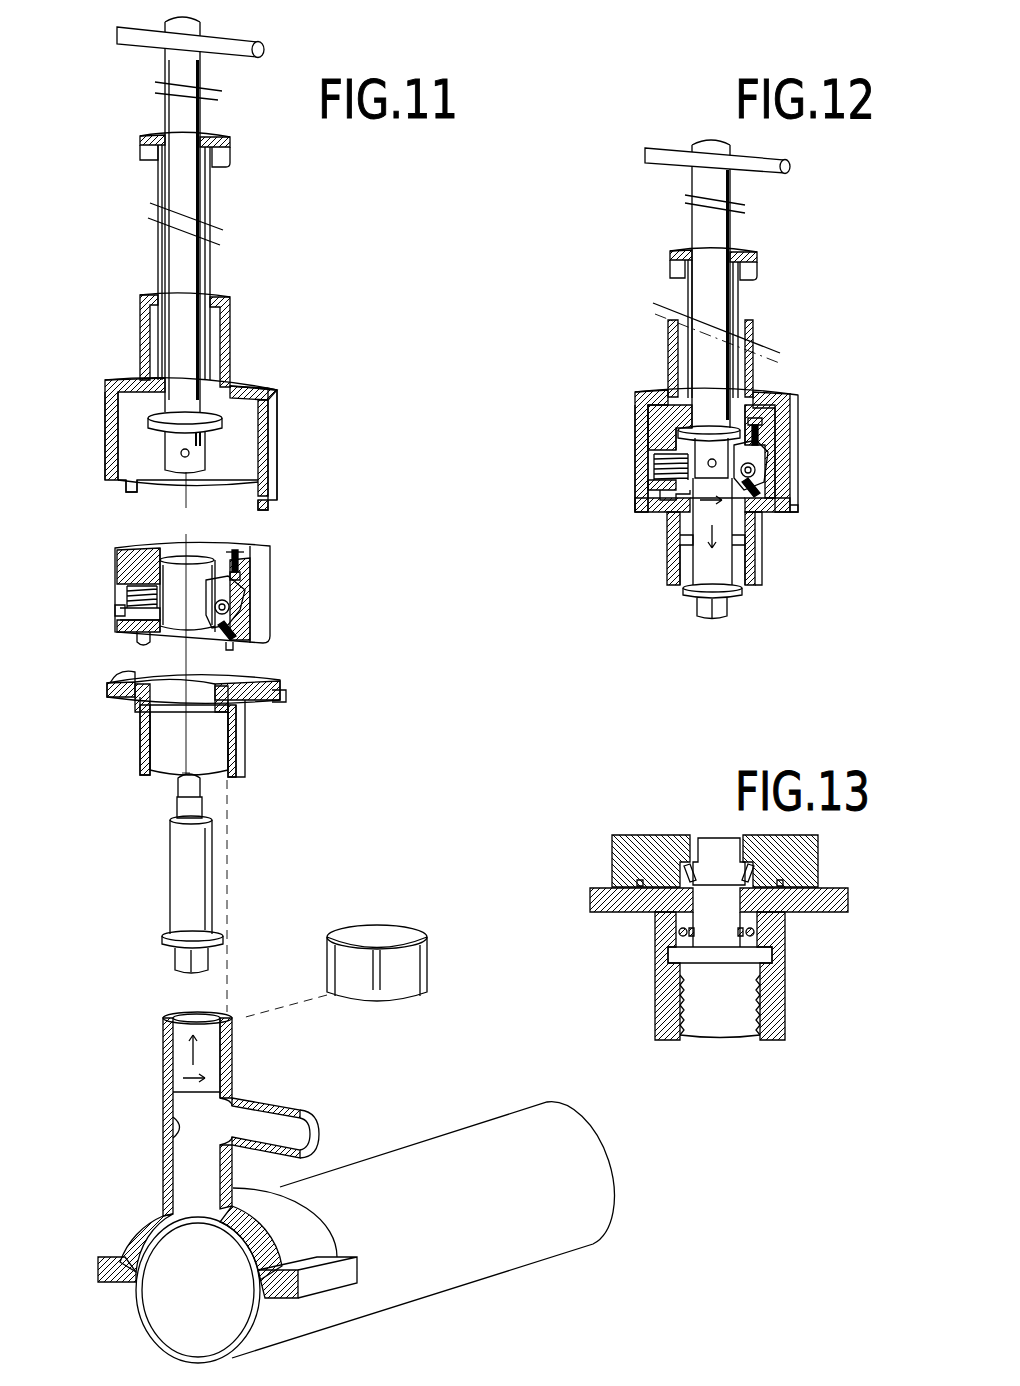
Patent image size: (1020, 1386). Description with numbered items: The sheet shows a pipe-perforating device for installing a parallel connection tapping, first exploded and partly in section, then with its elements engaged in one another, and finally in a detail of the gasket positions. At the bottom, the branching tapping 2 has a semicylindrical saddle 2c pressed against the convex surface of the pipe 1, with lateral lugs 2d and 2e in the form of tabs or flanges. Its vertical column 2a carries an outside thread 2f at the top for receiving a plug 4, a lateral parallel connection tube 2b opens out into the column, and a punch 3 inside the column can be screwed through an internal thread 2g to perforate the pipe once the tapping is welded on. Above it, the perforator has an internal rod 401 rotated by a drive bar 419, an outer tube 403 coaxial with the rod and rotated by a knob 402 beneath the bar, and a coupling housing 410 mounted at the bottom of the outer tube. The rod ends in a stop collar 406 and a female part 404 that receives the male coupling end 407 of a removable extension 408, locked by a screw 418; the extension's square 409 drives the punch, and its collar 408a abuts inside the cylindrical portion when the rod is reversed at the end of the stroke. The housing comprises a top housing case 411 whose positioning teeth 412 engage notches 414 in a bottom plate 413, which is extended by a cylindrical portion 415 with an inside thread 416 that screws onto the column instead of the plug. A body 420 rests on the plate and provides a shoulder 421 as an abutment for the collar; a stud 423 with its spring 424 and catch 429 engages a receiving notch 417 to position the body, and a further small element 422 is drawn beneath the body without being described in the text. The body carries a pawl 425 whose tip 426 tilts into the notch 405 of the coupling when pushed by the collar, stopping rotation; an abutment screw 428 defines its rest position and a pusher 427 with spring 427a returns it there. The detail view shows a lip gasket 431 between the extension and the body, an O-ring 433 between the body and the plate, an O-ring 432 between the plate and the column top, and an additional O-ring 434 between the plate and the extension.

In FIG. 11, the pipe 1 is at (467, 1147).
In FIG. 11, the branching tapping 2 is at (230, 1187).
In FIG. 11, the vertical column 2a is at (163, 1097).
In FIG. 11, the lateral parallel connection tube 2b is at (290, 1102).
In FIG. 11, the saddle 2c is at (290, 1222).
In FIG. 11, the lateral lug 2d is at (96, 1282).
In FIG. 11, the lateral lug 2e is at (323, 1284).
In FIG. 11, the outside thread 2f is at (233, 1042).
In FIG. 11, the internal thread 2g is at (173, 1133).
In FIG. 11, the punch 3 is at (178, 1060).
In FIG. 11, the plug 4 is at (373, 930).
In FIG. 11, the internal rod 401 is at (166, 58).
In FIG. 12, the internal rod 401 is at (732, 190).
In FIG. 11, the knob 402 is at (228, 152).
In FIG. 12, the knob 402 is at (757, 264).
In FIG. 11, the outer tube 403 is at (210, 212).
In FIG. 12, the outer tube 403 is at (736, 323).
In FIG. 11, the female part 404 is at (167, 448).
In FIG. 12, the female part 404 is at (700, 450).
In FIG. 11, the notch 405 is at (207, 440).
In FIG. 11, the stop collar 406 is at (148, 420).
In FIG. 11, the male coupling end 407 is at (178, 807).
In FIG. 11, the removable extension 408 is at (183, 875).
In FIG. 12, the removable extension 408 is at (705, 567).
In FIG. 11, the collar 408a is at (165, 943).
In FIG. 12, the collar 408a is at (733, 598).
In FIG. 11, the square 409 is at (185, 958).
In FIG. 12, the square 409 is at (700, 610).
In FIG. 11, the coupling housing 410 is at (294, 412).
In FIG. 12, the coupling housing 410 is at (628, 467).
In FIG. 11, the top housing case 411 is at (106, 438).
In FIG. 12, the top housing case 411 is at (790, 455).
In FIG. 11, the positioning teeth 412 is at (127, 492).
In FIG. 12, the positioning teeth 412 is at (796, 510).
In FIG. 11, the bottom plate 413 is at (260, 683).
In FIG. 13, the bottom plate 413 is at (827, 903).
In FIG. 11, the notches 414 is at (138, 677).
In FIG. 12, the notches 414 is at (787, 515).
In FIG. 11, the cylindrical portion 415 is at (243, 743).
In FIG. 12, the cylindrical portion 415 is at (764, 560).
In FIG. 13, the cylindrical portion 415 is at (775, 1000).
In FIG. 11, the inside thread 416 is at (168, 747).
In FIG. 12, the inside thread 416 is at (683, 550).
In FIG. 13, the inside thread 416 is at (678, 1018).
In FIG. 11, the receiving notch 417 is at (140, 694).
In FIG. 11, the screw 418 is at (187, 458).
In FIG. 11, the drive bar 419 is at (250, 43).
In FIG. 12, the drive bar 419 is at (773, 168).
In FIG. 11, the body 420 is at (263, 590).
In FIG. 12, the body 420 is at (652, 430).
In FIG. 13, the body 420 is at (802, 860).
In FIG. 11, the shoulder 421 is at (172, 553).
In FIG. 11, the pin 422 is at (188, 633).
In FIG. 11, the stud 423 is at (142, 640).
In FIG. 12, the stud 423 is at (663, 503).
In FIG. 11, the spring 424 is at (127, 593).
In FIG. 12, the spring 424 is at (652, 475).
In FIG. 11, the pawl 425 is at (270, 608).
In FIG. 12, the pawl 425 is at (770, 468).
In FIG. 11, the tip 426 is at (210, 557).
In FIG. 11, the pusher 427 is at (245, 556).
In FIG. 12, the pusher 427 is at (760, 415).
In FIG. 11, the spring 427a is at (252, 575).
In FIG. 12, the spring 427a is at (765, 432).
In FIG. 11, the abutment screw 428 is at (270, 630).
In FIG. 12, the abutment screw 428 is at (752, 488).
In FIG. 11, the catch 429 is at (118, 612).
In FIG. 13, the lip gasket 431 is at (691, 878).
In FIG. 13, the O-ring 432 is at (752, 948).
In FIG. 13, the O-ring 433 is at (642, 880).
In FIG. 13, the additional O-ring 434 is at (745, 920).